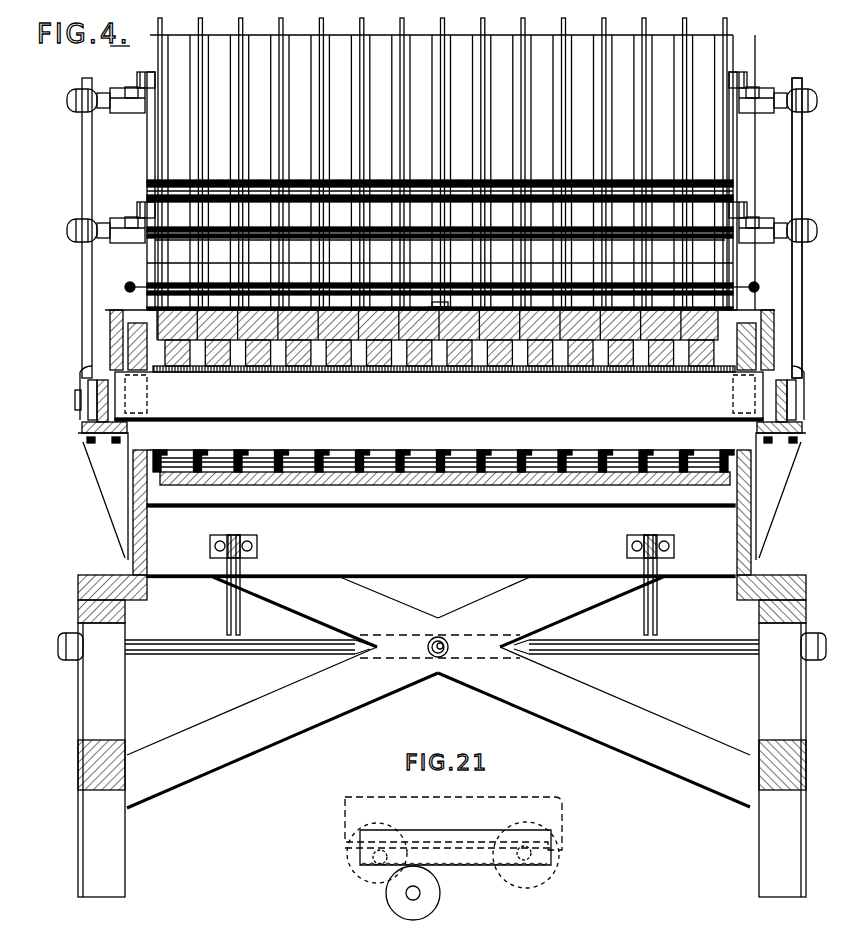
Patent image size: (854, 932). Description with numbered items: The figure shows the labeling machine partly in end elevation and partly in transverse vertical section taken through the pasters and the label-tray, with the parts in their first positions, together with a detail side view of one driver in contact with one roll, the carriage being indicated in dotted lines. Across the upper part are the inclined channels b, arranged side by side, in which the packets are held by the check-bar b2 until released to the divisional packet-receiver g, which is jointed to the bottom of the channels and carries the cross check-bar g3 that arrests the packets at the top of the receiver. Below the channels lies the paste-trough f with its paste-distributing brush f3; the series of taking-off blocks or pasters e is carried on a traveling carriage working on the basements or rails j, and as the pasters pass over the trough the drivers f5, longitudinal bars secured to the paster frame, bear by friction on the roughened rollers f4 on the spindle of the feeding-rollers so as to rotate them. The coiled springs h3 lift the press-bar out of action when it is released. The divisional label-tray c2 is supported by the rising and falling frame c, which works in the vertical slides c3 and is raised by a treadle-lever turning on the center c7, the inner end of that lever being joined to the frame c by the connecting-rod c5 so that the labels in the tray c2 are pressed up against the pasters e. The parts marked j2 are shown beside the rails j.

In FIG. 4, the inclined channels b is at (451, 164).
In FIG. 4, the check-bar b2 is at (248, 182).
In FIG. 4, the divisional packet-receiver g is at (440, 280).
In FIG. 4, the cross check-bar g3 is at (440, 244).
In FIG. 4, the center c7 is at (440, 302).
In FIG. 4, the coiled springs h3 is at (125, 288).
In FIG. 4, the taking-off blocks or pasters e is at (437, 338).
In FIG. 4, the paste-distributing brush f3 is at (340, 373).
In FIG. 4, the paste-trough f is at (439, 396).
In FIG. 4, the drivers f5 is at (140, 372).
In FIG. 21, the drivers f5 is at (452, 855).
In FIG. 4, the roughened rollers f4 is at (440, 394).
In FIG. 21, the roughened rollers f4 is at (440, 895).
In FIG. 4, the basements or rails j is at (96, 398).
In FIG. 4, the bracket block j2 is at (147, 412).
In FIG. 4, the divisional label-tray c2 is at (248, 458).
In FIG. 4, the vertical slides c3 is at (128, 490).
In FIG. 4, the rising and falling frame c is at (441, 541).
In FIG. 4, the connecting-rod c5 is at (226, 611).